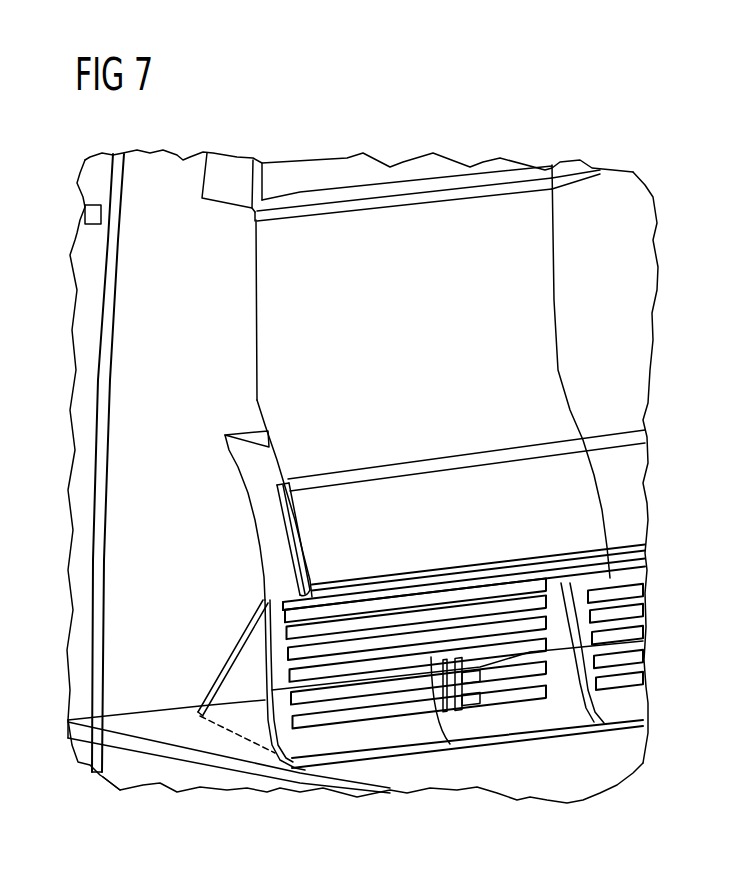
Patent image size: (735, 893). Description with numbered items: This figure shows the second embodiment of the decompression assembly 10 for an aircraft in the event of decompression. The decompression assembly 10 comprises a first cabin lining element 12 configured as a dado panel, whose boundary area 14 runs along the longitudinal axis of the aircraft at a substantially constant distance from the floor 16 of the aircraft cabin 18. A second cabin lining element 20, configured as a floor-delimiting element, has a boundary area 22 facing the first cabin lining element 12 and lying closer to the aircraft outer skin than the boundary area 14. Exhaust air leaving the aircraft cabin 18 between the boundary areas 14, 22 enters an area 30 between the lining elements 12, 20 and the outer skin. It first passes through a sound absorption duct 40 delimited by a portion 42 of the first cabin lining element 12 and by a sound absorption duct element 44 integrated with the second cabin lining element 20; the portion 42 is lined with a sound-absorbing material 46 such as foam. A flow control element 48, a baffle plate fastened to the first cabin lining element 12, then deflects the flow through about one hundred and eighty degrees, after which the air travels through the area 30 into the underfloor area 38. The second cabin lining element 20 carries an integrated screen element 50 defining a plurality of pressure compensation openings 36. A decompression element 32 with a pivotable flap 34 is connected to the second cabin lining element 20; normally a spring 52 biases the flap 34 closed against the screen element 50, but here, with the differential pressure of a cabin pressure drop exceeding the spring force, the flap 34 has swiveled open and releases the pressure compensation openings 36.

The decompression assembly 10 is at (575, 135).
The first cabin lining element 12 is at (548, 268).
The boundary area 14 is at (628, 583).
The floor 16 is at (193, 757).
The aircraft cabin 18 is at (363, 320).
The second cabin lining element 20 is at (633, 702).
The boundary area 22 is at (262, 597).
The area 30 is at (190, 298).
The decompression element 32 is at (188, 679).
The flap 34 is at (236, 645).
The pressure compensation openings 36 is at (444, 690).
The underfloor area 38 is at (373, 803).
The sound absorption duct 40 is at (252, 487).
The portion 42 is at (410, 492).
The sound absorption duct element 44 is at (244, 488).
The sound-absorbing material 46 is at (298, 518).
The flow control element 48 is at (256, 432).
The screen element 50 is at (511, 686).
The spring 52 is at (244, 733).